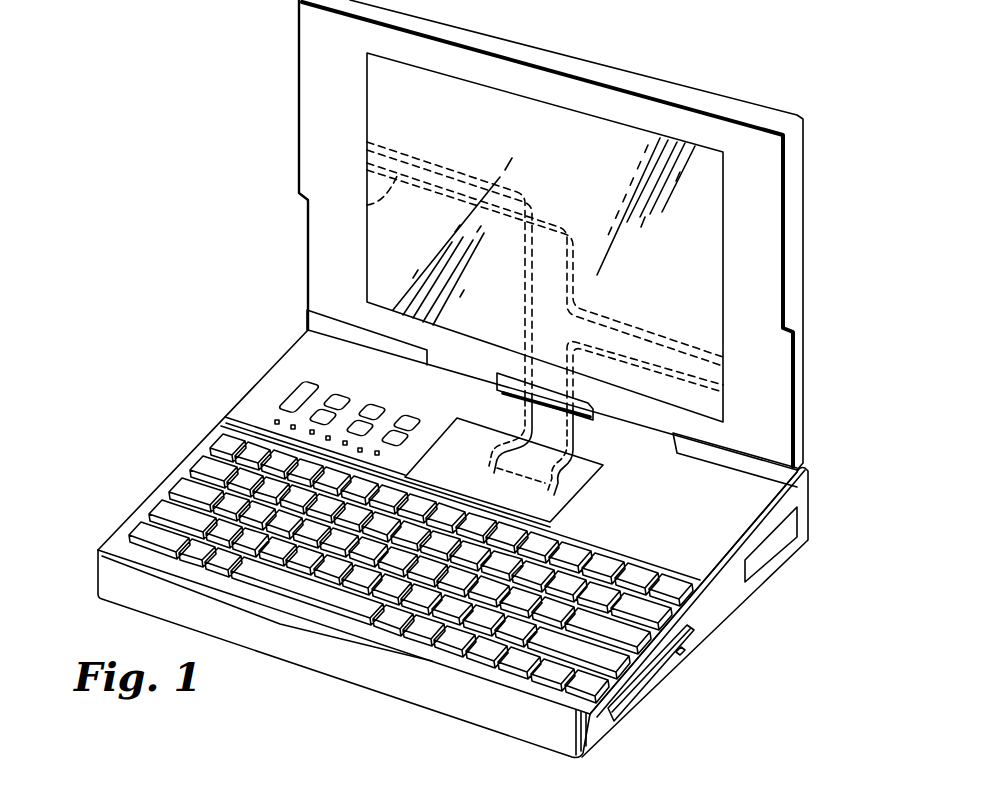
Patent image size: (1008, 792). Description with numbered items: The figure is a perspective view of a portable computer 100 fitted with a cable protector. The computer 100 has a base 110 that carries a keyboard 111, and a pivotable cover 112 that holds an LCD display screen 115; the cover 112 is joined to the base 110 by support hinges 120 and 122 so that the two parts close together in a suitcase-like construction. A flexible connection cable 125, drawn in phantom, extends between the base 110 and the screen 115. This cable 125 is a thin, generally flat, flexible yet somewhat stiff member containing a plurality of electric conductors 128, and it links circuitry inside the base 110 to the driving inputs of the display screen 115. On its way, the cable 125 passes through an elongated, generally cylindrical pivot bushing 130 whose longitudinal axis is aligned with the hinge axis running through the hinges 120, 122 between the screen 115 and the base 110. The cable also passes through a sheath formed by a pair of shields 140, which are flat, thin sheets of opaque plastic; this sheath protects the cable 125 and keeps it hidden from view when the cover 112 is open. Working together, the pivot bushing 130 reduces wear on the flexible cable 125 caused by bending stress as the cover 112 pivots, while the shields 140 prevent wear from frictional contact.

The computer 100 is at (159, 176).
The base 110 is at (811, 505).
The keyboard 111 is at (187, 498).
The pivotable cover 112 is at (755, 104).
The LCD display screen 115 is at (382, 90).
The support hinge 120 is at (669, 443).
The support hinge 122 is at (425, 364).
The flexible connection cable 125 is at (367, 205).
The electric conductors 128 is at (443, 183).
The pivot bushing 130 is at (500, 391).
The shields 140 is at (592, 428).